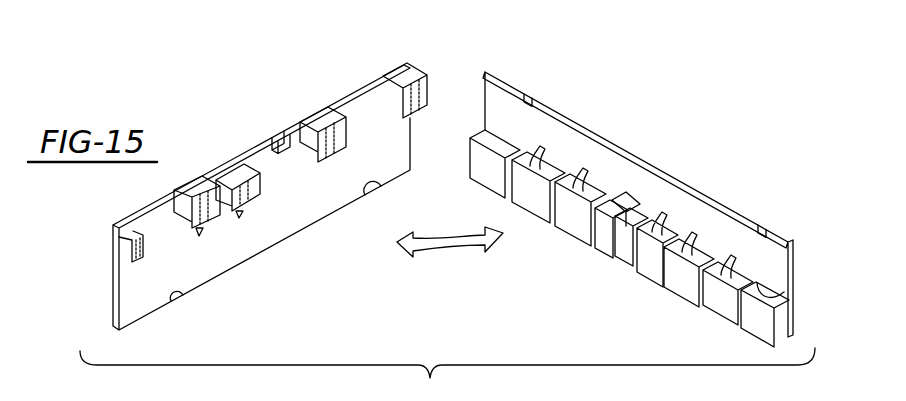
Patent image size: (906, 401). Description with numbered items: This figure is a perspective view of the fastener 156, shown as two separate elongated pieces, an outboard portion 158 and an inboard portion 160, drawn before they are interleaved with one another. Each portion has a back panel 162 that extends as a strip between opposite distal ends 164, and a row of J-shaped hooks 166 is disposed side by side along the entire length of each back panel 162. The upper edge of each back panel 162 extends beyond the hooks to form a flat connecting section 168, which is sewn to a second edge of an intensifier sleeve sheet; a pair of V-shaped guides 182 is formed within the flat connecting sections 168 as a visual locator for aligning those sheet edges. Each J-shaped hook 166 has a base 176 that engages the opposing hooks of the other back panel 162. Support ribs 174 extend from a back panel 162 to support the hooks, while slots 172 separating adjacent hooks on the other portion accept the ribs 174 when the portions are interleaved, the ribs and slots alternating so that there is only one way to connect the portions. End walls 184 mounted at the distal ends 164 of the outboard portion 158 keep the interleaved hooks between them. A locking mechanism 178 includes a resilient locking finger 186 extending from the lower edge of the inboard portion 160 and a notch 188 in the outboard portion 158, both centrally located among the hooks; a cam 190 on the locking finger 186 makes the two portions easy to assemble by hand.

The fastener 156 is at (226, 53).
The outboard portion 158 is at (115, 272).
The inboard portion 160 is at (710, 197).
The back panel 162 is at (218, 250).
The distal end 164 is at (115, 312).
The J-shaped hook 166 is at (408, 158).
The flat connecting section 168 is at (258, 244).
The slot 172 is at (381, 100).
The support rib 174 is at (637, 225).
The base 176 is at (188, 192).
The locking mechanism 178 is at (267, 126).
The V-shaped guide 182 is at (180, 301).
The end wall 184 is at (783, 323).
The locking finger 186 is at (637, 226).
The notch 188 is at (262, 167).
The cam 190 is at (600, 250).